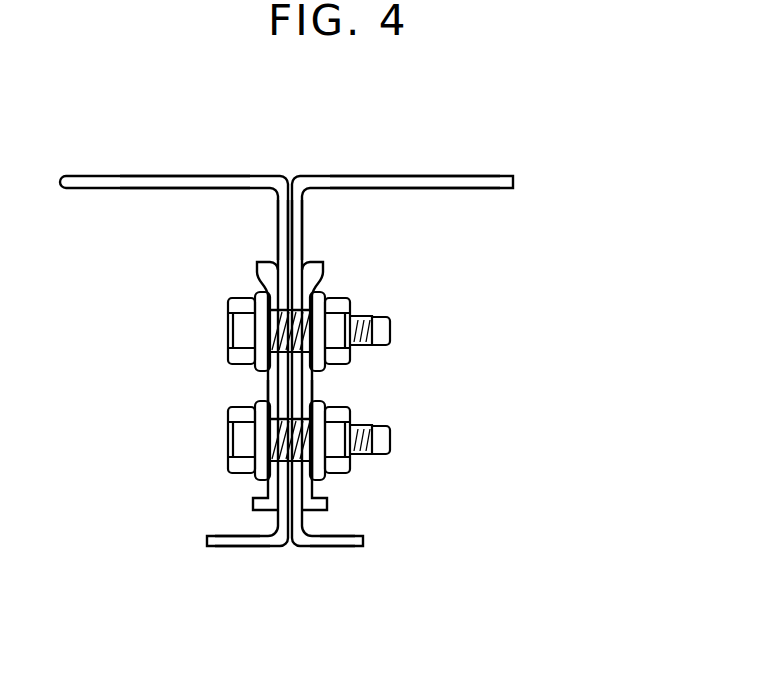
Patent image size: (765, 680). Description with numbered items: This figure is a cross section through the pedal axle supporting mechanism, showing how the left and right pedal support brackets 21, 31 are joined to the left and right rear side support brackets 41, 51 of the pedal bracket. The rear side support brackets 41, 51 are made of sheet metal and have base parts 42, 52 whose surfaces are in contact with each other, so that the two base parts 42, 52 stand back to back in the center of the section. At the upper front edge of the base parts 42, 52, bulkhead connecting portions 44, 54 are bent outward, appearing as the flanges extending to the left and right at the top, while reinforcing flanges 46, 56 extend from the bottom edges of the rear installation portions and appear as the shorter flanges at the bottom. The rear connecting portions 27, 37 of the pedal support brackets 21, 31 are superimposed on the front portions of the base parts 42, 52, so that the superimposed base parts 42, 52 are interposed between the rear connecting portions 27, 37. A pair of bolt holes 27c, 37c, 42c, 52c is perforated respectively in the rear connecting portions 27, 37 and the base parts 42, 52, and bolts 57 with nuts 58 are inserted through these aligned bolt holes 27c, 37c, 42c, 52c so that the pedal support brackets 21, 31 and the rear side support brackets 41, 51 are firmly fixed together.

The pedal support bracket 21 is at (254, 279).
The rear connecting portion 27 is at (268, 384).
The bolt hole 27c is at (258, 288).
The pedal support bracket 31 is at (331, 268).
The rear connecting portion 37 is at (312, 385).
The bolt hole 37c is at (316, 294).
The rear side support bracket 41 is at (80, 174).
The base part 42 is at (278, 228).
The bolt hole 42c is at (275, 376).
The bulkhead connecting portion 44 is at (142, 175).
The reinforcing flange 46 is at (231, 547).
The rear side support bracket 51 is at (502, 174).
The base part 52 is at (302, 223).
The bolt hole 52c is at (305, 378).
The bulkhead connecting portion 54 is at (427, 176).
The reinforcing flange 56 is at (340, 547).
The bolt 57 is at (233, 325).
The nut 58 is at (347, 300).